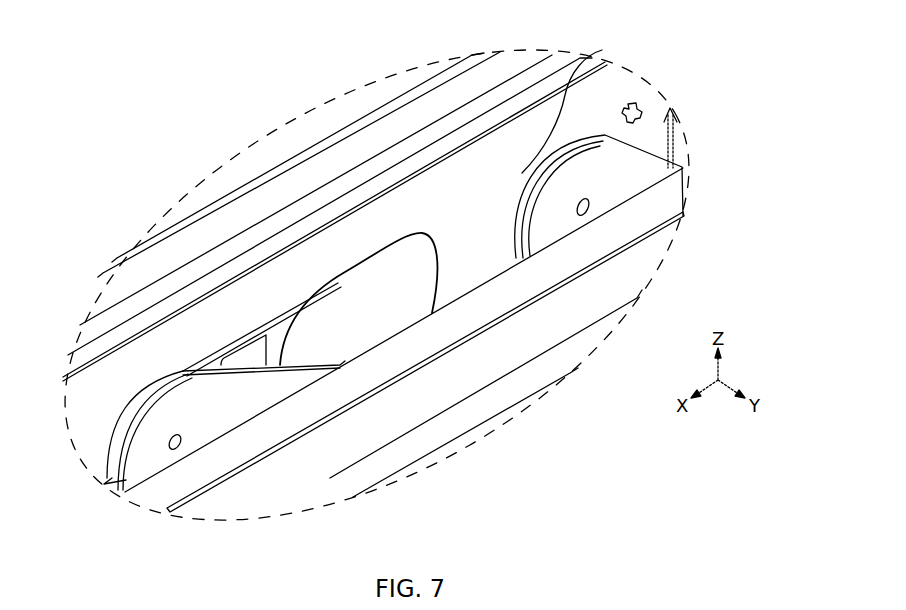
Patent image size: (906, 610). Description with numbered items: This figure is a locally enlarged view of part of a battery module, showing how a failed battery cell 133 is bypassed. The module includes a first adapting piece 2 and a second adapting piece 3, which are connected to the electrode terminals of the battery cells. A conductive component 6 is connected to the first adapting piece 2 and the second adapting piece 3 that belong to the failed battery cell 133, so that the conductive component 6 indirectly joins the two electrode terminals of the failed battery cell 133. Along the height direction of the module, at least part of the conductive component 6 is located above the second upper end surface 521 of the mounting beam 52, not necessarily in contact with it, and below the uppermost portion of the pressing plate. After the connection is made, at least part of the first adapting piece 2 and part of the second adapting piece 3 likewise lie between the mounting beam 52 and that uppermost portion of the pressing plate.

The first adapting piece 2 is at (120, 478).
The second adapting piece 3 is at (657, 165).
The conductive component 6 is at (572, 80).
The mounting beam 52 is at (280, 490).
The second upper end surface 521 is at (627, 235).
The failed battery cell 133 is at (460, 277).